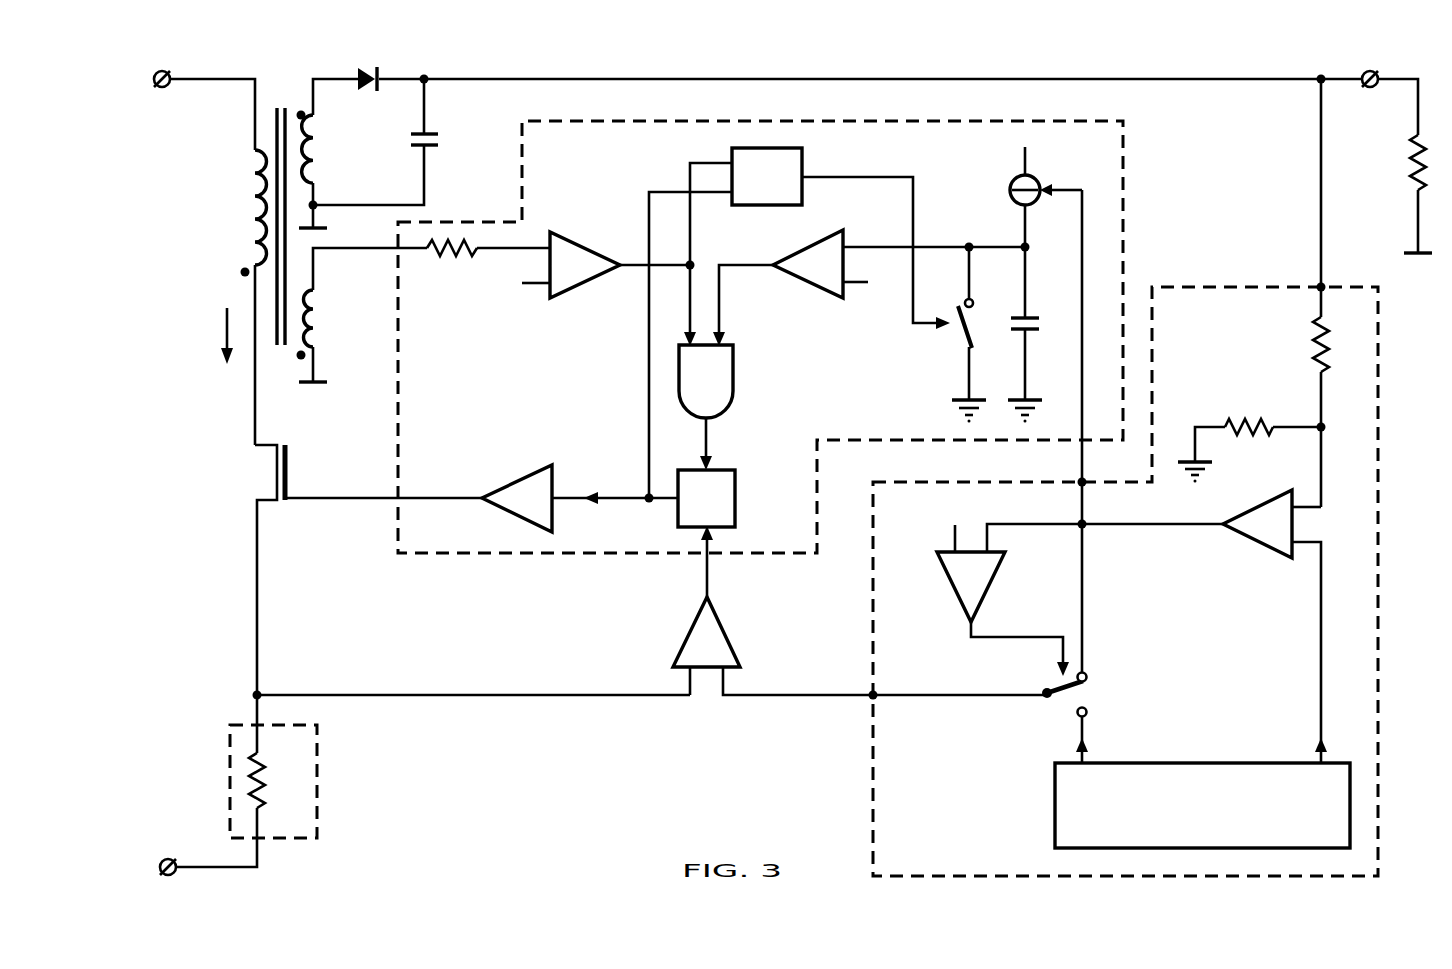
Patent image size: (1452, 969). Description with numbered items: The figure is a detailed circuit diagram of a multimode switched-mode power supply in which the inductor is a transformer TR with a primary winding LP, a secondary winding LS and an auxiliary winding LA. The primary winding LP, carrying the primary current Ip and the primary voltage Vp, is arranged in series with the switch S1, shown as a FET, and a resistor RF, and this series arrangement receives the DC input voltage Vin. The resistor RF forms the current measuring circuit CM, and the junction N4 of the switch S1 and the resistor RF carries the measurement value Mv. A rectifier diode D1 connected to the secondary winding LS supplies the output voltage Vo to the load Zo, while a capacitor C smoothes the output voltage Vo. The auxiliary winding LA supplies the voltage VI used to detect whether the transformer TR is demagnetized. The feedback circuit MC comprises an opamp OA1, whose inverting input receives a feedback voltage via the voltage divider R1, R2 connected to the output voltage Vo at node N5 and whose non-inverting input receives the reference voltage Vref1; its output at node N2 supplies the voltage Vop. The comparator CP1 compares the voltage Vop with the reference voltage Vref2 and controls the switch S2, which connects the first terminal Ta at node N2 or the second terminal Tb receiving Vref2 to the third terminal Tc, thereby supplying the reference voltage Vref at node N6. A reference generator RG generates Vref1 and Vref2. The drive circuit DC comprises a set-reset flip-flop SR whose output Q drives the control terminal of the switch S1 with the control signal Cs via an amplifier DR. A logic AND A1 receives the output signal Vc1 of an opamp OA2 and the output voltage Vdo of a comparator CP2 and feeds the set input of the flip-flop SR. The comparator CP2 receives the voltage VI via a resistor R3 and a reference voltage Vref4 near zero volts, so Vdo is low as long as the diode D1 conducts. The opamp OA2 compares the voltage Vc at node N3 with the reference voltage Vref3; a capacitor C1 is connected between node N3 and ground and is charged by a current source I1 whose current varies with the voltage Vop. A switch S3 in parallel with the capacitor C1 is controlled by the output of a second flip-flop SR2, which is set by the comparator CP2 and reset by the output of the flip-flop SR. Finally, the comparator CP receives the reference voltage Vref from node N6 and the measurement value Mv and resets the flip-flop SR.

The transformer TR is at (280, 108).
The primary winding LP is at (244, 297).
The secondary winding LS is at (328, 153).
The auxiliary winding voltage VI is at (362, 315).
The auxiliary winding LA is at (300, 342).
The rectifier diode D1 is at (364, 93).
The capacitor C is at (440, 139).
The switch S1 is at (270, 470).
The control signal Cs is at (384, 485).
The DC input voltage Vin is at (192, 473).
The primary voltage Vp is at (202, 207).
The primary current Ip is at (209, 336).
The resistor R3 is at (460, 262).
The comparator CP2 is at (582, 290).
The reference voltage Vref4 is at (522, 299).
The set-reset flip-flop SR2 is at (802, 160).
The operational amplifier OA2 is at (808, 290).
The reference voltage Vref3 is at (877, 298).
The capacitor voltage Vc is at (934, 235).
The output signal of opamp OA2 Vc1 is at (743, 305).
The output voltage of comparator CP2 Vdo is at (694, 254).
The logic AND A1 is at (733, 383).
The set-reset flip-flop SR is at (735, 502).
The amplifier DR is at (512, 477).
The comparator CP is at (688, 632).
The measurement value Mv is at (473, 683).
The node N4 is at (240, 688).
The reference voltage Vref is at (792, 679).
The node N6 is at (858, 680).
The current measuring circuit CM is at (317, 757).
The resistor RF is at (266, 782).
The feedback circuit MC is at (870, 760).
The drive circuit DC is at (1125, 155).
The current source I1 is at (1010, 185).
The node N3 is at (1042, 247).
The switch S3 is at (962, 330).
The capacitor C1 is at (1040, 322).
The node N5 is at (1307, 196).
The output voltage Vo is at (1370, 90).
The load Zo is at (1409, 175).
The voltage divider resistor R1 is at (1313, 338).
The voltage divider resistor R2 is at (1238, 417).
The operational amplifier OA1 is at (1252, 543).
The reference voltage Vref1 is at (1289, 667).
The node N2 is at (1067, 431).
The opamp output voltage Vop is at (1054, 525).
The comparator CP1 is at (990, 590).
The reference voltage Vref2 is at (1025, 639).
The switch S2 is at (1067, 697).
The first terminal Ta is at (1096, 671).
The second terminal Tb is at (1096, 733).
The third terminal Tc is at (962, 682).
The reference generator RG is at (1055, 812).